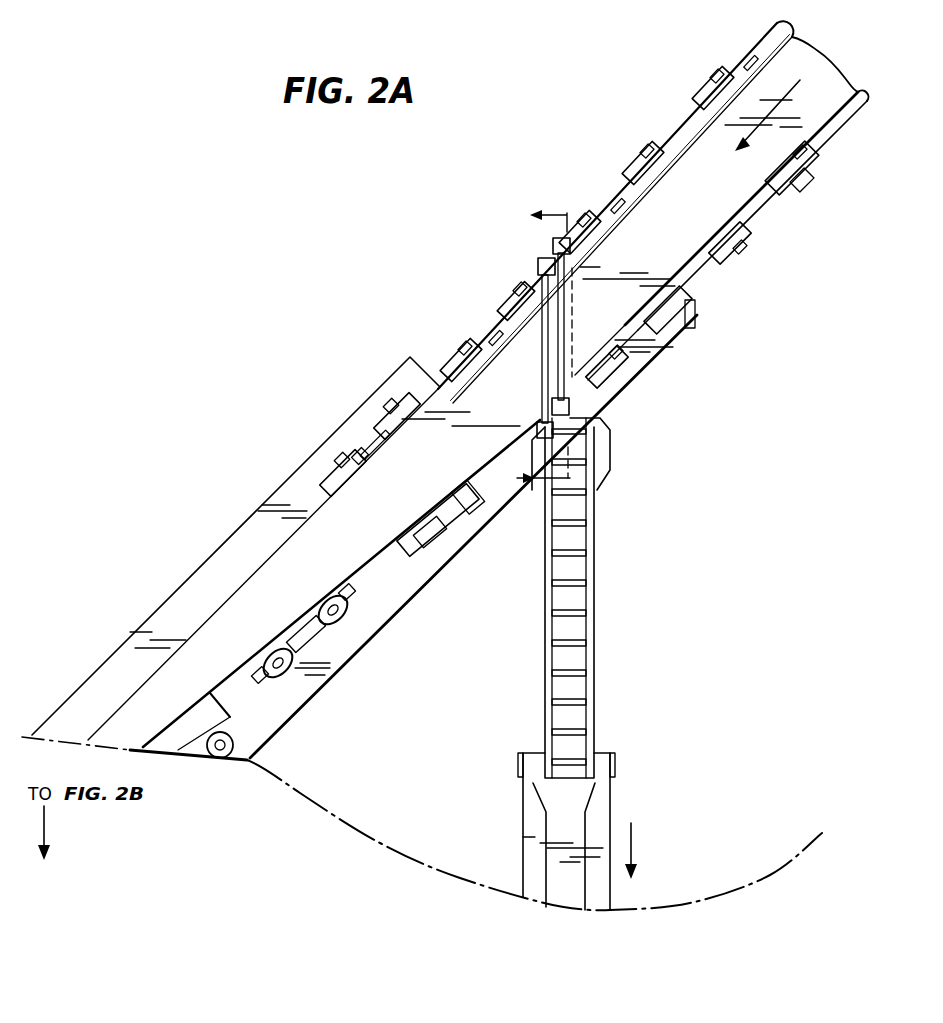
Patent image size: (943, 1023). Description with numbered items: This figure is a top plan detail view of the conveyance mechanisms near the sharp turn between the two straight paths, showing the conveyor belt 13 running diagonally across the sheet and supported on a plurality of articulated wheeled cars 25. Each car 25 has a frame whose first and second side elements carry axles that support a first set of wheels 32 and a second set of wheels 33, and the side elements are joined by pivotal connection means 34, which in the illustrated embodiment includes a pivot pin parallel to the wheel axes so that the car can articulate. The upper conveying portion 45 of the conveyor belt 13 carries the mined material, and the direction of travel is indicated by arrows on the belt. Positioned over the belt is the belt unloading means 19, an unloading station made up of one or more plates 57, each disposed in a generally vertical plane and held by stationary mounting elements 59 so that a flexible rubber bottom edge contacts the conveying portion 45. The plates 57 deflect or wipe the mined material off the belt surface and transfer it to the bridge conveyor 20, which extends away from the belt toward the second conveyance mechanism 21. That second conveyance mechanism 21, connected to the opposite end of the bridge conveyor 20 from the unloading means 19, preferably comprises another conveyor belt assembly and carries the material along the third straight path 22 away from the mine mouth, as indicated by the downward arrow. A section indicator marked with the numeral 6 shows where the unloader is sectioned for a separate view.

The conveyor belt 13 is at (700, 167).
The means for moving mined material off the conveyor belt 19 is at (592, 332).
The bridge conveyor 20 is at (616, 589).
The second conveyance mechanism 21 is at (617, 799).
The third straight path 22 is at (646, 851).
The articulated wheeled car 25 is at (808, 187).
The first set of wheels 32 is at (390, 410).
The second set of wheels 33 is at (337, 466).
The pivotal connection means 34 is at (616, 190).
The upper conveying portion of the conveyor belt 45 is at (803, 148).
The plate 57 is at (563, 323).
The stationary mounting element 59 is at (553, 246).
The section line 6- 6 is at (537, 347).